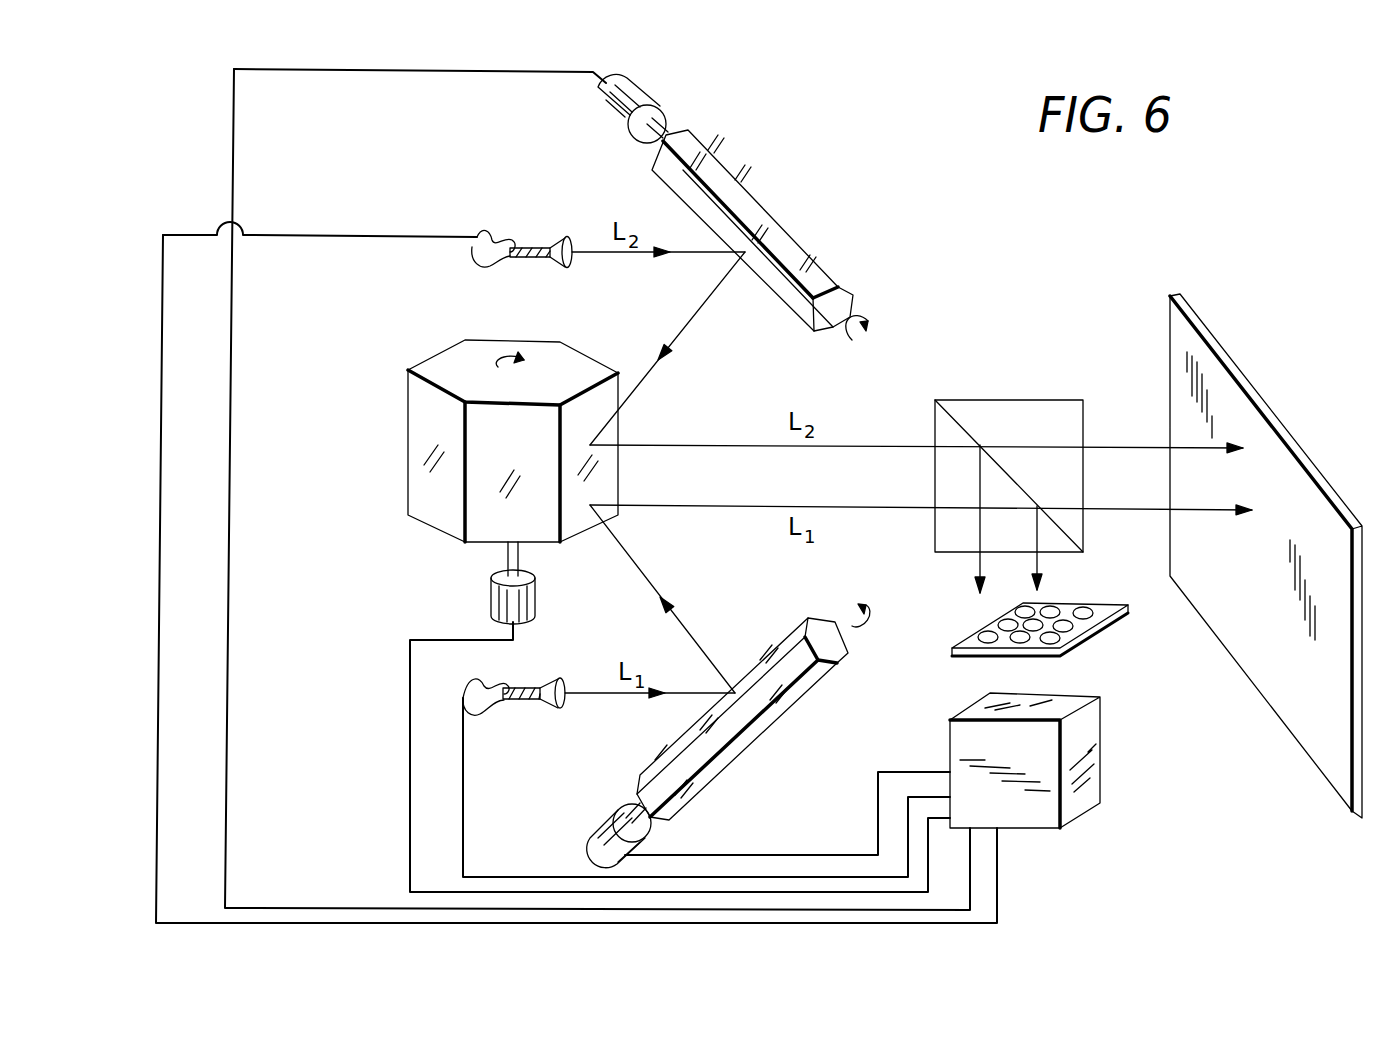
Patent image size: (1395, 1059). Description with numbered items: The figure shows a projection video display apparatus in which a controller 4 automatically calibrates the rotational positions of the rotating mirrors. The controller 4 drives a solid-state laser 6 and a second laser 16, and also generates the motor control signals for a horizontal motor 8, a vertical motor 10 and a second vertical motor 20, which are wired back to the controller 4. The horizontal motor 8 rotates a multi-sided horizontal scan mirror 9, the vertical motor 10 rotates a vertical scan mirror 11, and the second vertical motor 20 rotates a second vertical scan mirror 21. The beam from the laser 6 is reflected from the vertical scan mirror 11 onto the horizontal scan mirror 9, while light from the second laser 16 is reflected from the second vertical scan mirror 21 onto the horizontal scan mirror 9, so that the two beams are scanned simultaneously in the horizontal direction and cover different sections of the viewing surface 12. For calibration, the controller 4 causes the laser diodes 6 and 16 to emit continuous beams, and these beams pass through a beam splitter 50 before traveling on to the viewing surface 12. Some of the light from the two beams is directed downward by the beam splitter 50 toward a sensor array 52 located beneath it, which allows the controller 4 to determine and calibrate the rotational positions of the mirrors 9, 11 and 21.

The controller 4 is at (1087, 777).
The solid-state laser 6 is at (528, 700).
The horizontal motor 8 is at (538, 597).
The horizontal scan mirror 9 is at (428, 371).
The vertical motor 10 is at (614, 812).
The vertical scan mirror 11 is at (748, 748).
The viewing surface 12 is at (1278, 418).
The second laser 16 is at (538, 248).
The second vertical motor 20 is at (650, 92).
The second vertical scan mirror 21 is at (731, 178).
The beam splitter 50 is at (1058, 398).
The sensor array 52 is at (1090, 640).